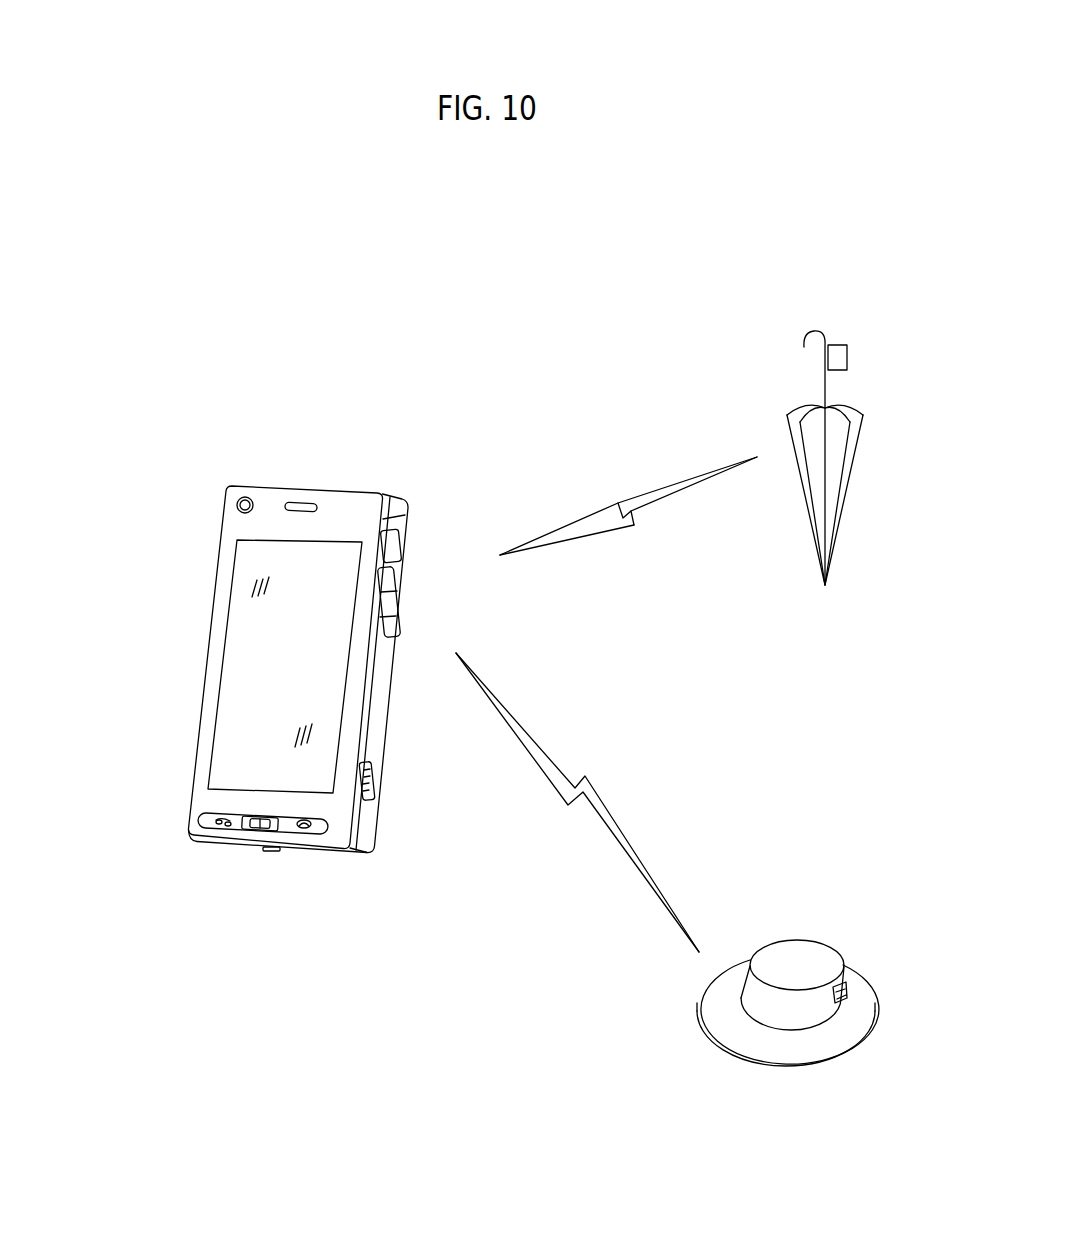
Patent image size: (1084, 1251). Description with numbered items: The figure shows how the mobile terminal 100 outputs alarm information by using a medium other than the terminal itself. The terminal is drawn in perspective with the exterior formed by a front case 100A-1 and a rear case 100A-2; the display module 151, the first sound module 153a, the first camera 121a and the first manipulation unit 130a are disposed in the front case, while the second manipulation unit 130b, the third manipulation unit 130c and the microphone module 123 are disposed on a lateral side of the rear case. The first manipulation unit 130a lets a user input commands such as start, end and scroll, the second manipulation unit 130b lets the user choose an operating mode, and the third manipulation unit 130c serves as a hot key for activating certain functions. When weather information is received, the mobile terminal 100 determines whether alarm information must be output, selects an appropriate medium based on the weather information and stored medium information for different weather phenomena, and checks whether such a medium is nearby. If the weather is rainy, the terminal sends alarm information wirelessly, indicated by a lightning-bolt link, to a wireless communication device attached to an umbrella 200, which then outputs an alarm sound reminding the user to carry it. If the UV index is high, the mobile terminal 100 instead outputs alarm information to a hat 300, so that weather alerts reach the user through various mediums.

The mobile terminal 100 is at (172, 498).
The front case 100A-1 is at (385, 495).
The rear case 100A-2 is at (400, 523).
The first camera 121a is at (242, 496).
The first sound module 153a is at (302, 502).
The display module 151 is at (237, 653).
The first manipulation unit 130a is at (218, 813).
The second manipulation unit 130b is at (397, 603).
The third manipulation unit 130c is at (373, 777).
The microphone module 123 is at (275, 852).
The umbrella 200 is at (840, 343).
The hat 300 is at (847, 987).